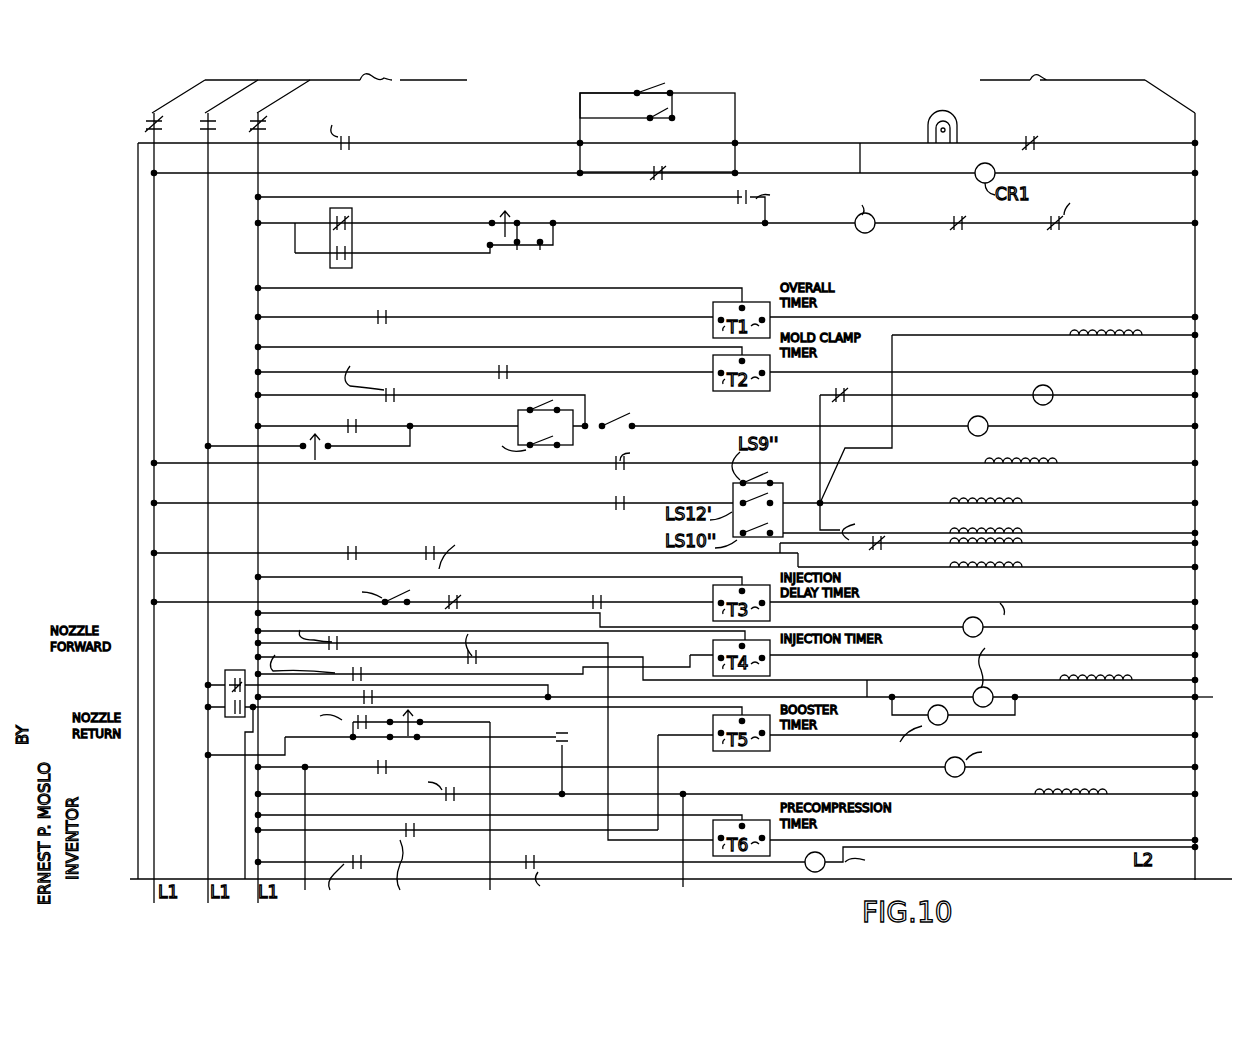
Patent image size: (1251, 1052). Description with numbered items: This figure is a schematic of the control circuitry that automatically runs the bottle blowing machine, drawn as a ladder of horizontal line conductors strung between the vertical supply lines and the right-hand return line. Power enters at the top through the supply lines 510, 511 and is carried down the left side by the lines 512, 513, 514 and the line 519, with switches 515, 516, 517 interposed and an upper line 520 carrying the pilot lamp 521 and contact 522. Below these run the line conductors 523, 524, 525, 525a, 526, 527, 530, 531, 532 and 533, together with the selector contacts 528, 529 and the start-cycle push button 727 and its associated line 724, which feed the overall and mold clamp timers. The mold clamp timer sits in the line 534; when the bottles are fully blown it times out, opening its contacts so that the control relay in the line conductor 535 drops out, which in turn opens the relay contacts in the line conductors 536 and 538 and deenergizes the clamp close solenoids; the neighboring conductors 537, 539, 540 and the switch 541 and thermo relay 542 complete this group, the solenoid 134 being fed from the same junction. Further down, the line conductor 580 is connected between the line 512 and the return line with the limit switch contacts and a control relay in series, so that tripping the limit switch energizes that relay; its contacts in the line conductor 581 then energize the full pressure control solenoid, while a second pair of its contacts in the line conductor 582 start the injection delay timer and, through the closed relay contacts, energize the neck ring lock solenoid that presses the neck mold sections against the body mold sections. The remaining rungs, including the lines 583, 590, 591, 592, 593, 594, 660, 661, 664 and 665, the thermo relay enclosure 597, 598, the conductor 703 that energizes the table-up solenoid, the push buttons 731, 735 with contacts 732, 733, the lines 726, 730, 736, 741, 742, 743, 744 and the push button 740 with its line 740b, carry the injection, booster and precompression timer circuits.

The supply line L1 510 is at (372, 92).
The supply line L2 511 is at (1062, 84).
The line 512 is at (155, 247).
The vertical line 513 is at (208, 295).
The line 514 is at (252, 258).
The switch 515 is at (146, 124).
The switch 516 is at (180, 132).
The switch 517 is at (242, 132).
The line 519 is at (138, 334).
The line 520 is at (452, 142).
The pilot lamp 521 is at (951, 106).
The contact 522 is at (1016, 140).
The line 523 is at (434, 168).
The line 524 is at (852, 162).
The line 525 is at (565, 214).
The line 525a is at (394, 212).
The line 526 is at (696, 225).
The line 527 is at (326, 254).
The selector contact 528 is at (320, 216).
The selector contact 529 is at (365, 262).
The line 530 is at (511, 258).
The line 531 is at (344, 195).
The line 532 is at (506, 314).
The line 533 is at (612, 280).
The line 534 is at (667, 370).
The line conductor 535 is at (472, 418).
The line conductor 536 is at (678, 476).
The line 537 is at (1154, 534).
The line conductor 538 is at (526, 510).
The junction 539 is at (836, 494).
The line 540 is at (938, 398).
The selector switch contact 541 is at (846, 402).
The thermo relay 542 is at (1042, 394).
The line conductor 580 is at (514, 604).
The line conductor 581 is at (587, 550).
The line conductor 582 is at (1154, 598).
The line 583 is at (548, 702).
The line 590 is at (366, 636).
The line 591 is at (1018, 700).
The line 592 is at (1154, 650).
The line 593 is at (914, 680).
The line 594 is at (620, 642).
The thermo relay box 597 is at (611, 87).
The thermo relay switch box 598 is at (634, 118).
The line 660 is at (840, 764).
The line 661 is at (790, 790).
The line 664 is at (1038, 848).
The line 665 is at (1168, 743).
The line conductor 703 is at (308, 786).
The line 724 is at (552, 247).
The line 726 is at (420, 405).
The start cycle push button 727 is at (486, 234).
The line 730 is at (308, 420).
The push button 731 is at (320, 460).
The push button contact 732 is at (226, 708).
The push button contact 733 is at (234, 674).
The push button 735 is at (208, 688).
The line 736 is at (244, 812).
The push button 740 is at (472, 722).
The line 740b is at (418, 738).
The line 741 is at (286, 772).
The line 742 is at (574, 734).
The line 743 is at (486, 780).
The line 744 is at (300, 738).
The solenoid 134 is at (1114, 316).